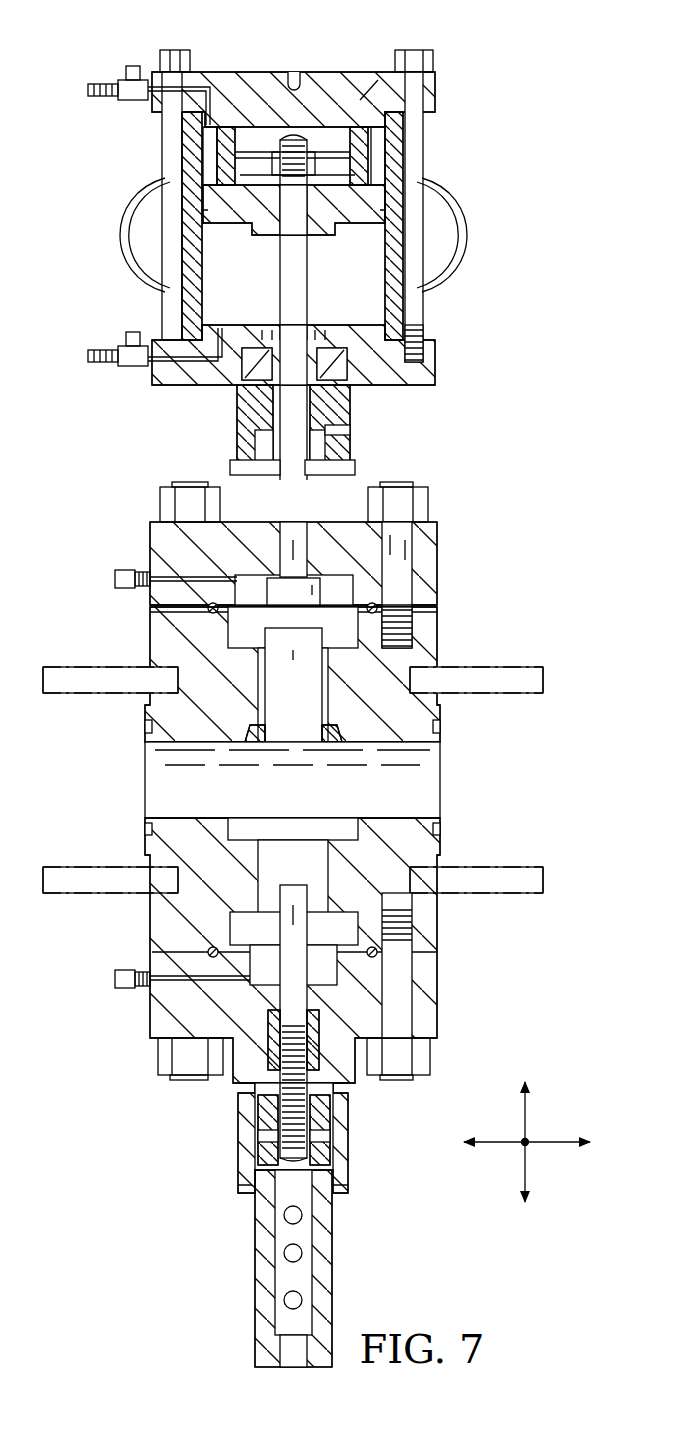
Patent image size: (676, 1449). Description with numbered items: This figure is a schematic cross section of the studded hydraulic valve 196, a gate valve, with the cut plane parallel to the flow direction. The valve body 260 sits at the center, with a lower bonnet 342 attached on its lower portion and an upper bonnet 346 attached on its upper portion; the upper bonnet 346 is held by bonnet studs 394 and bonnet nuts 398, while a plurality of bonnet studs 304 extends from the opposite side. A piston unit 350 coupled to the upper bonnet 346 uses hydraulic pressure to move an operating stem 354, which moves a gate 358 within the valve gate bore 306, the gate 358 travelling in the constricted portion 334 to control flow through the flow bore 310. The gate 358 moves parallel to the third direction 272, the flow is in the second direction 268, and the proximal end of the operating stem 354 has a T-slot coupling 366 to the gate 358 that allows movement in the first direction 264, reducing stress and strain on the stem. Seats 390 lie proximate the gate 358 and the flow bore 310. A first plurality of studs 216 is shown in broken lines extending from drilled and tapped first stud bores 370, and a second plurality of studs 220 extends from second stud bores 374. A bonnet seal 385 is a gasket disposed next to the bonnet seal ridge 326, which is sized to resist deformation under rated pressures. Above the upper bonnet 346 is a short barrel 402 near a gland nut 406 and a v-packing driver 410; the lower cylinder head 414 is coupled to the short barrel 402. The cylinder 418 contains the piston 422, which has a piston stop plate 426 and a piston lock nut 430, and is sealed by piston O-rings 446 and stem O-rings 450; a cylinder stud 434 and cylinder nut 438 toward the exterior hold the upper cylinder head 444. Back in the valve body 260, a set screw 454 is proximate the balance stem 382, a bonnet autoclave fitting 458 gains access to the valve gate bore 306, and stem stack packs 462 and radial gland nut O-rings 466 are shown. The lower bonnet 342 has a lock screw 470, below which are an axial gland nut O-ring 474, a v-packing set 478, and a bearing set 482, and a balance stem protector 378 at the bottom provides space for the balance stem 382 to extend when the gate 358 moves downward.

The studded hydraulic valve 196 is at (520, 132).
The piston unit 350 is at (210, 66).
The upper cylinder head 444 is at (360, 75).
The cylinder stud 434 is at (418, 50).
The cylinder nut 438 is at (436, 62).
The piston O-rings 446 is at (184, 118).
The operating stem 354 is at (372, 135).
The piston stop plate 426 is at (370, 162).
The piston lock nut 430 is at (392, 205).
The piston 422 is at (388, 225).
The cylinder 418 is at (456, 255).
The stem O-rings 450 is at (266, 330).
The lower cylinder head 414 is at (437, 370).
The v-packing driver 410 is at (250, 403).
The gland nut 406 is at (338, 447).
The short barrel 402 is at (353, 470).
The bonnet studs 394 is at (190, 482).
The bonnet nuts 398 is at (160, 504).
The upper bonnet 346 is at (438, 562).
The T-slot coupling 366 is at (326, 592).
The valve body 260 is at (432, 732).
The gate 358 is at (262, 706).
The seats 390 is at (254, 746).
The first stud bores 370 is at (152, 682).
The second stud bores 374 is at (438, 682).
The first plurality of studs 216 is at (58, 666).
The second plurality of studs 220 is at (527, 666).
The flow bore 310 is at (396, 746).
The set screw 454 is at (302, 836).
The lower bonnet 342 is at (440, 992).
The balance stem 382 is at (315, 880).
The constricted portion 334 is at (258, 892).
The bonnet seal ridge 326 is at (196, 966).
The bonnet autoclave fitting 458 is at (113, 978).
The bonnet seal 385 is at (388, 938).
The bonnet studs 304 is at (185, 1052).
The stem stack packs 462 is at (272, 1045).
The valve gate bore 306 is at (326, 990).
The radial gland nut O-rings 466 is at (262, 1085).
The lock screw 470 is at (342, 1095).
The axial gland nut O-ring 474 is at (255, 1120).
The v-packing set 478 is at (335, 1150).
The bearing set 482 is at (243, 1183).
The balance stem protector 378 is at (334, 1225).
The third direction 272 is at (528, 1130).
The first direction 264 is at (508, 1158).
The second direction 268 is at (545, 1156).